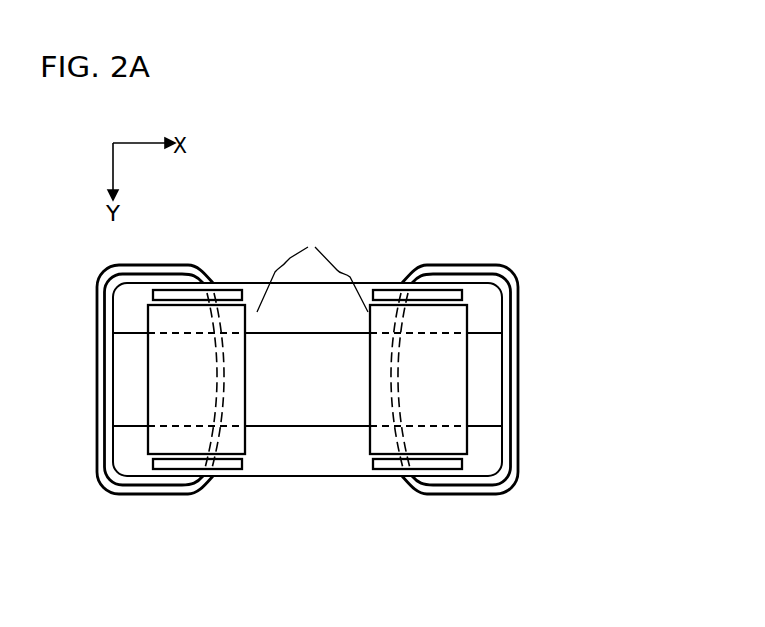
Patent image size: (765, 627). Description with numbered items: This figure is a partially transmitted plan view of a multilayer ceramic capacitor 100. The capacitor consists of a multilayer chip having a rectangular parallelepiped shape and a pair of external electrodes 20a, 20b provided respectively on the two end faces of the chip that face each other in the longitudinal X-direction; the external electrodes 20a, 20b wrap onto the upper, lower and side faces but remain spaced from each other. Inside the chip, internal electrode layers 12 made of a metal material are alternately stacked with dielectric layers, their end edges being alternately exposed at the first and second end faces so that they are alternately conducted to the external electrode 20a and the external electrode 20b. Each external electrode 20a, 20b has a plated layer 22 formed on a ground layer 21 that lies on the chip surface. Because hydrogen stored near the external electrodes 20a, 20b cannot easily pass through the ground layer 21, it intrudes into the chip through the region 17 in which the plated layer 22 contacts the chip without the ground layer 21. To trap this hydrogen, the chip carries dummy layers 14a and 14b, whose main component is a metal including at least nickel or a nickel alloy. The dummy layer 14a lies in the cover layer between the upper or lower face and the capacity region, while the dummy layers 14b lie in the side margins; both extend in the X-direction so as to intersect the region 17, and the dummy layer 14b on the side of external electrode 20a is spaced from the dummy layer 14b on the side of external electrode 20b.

The multilayer ceramic capacitor 100 is at (367, 173).
The internal electrode layer 12 is at (128, 332).
The dummy layer 14a is at (312, 265).
The dummy layer 14b is at (220, 292).
The region 17 is at (215, 395).
The external electrode 20a is at (162, 433).
The external electrode 20b is at (443, 480).
The ground layer 21 is at (143, 480).
The plated layer 22 is at (180, 487).